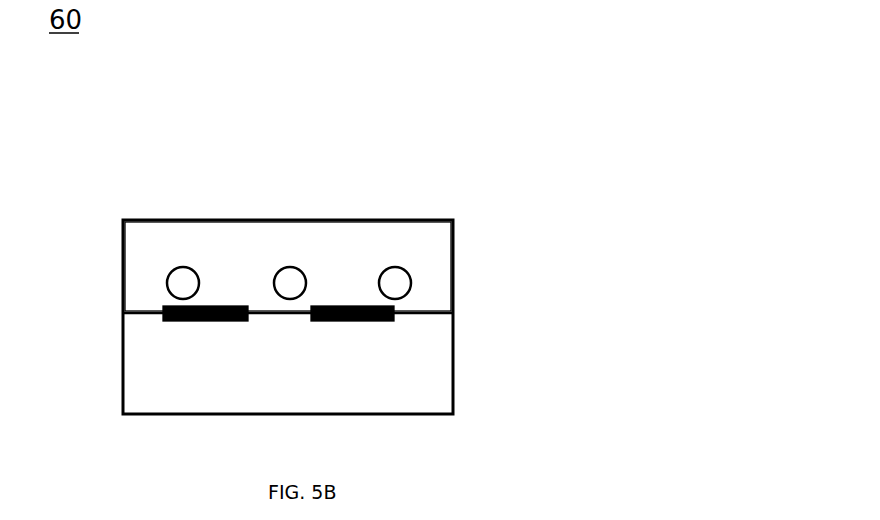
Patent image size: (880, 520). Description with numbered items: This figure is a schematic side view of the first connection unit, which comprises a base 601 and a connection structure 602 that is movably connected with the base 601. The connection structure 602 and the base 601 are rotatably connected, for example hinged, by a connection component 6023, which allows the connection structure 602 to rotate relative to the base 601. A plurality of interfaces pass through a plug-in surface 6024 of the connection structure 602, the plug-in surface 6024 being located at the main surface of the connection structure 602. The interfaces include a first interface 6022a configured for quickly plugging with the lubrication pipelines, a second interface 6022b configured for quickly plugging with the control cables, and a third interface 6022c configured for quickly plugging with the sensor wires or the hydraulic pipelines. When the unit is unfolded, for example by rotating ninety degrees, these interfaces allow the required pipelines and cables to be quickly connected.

The base 601 is at (385, 387).
The connection structure 602 is at (440, 255).
The plug-in surface 6024 is at (423, 242).
The connection component 6023 is at (163, 315).
The first interface 6022a is at (177, 273).
The second interface 6022b is at (287, 272).
The third interface 6022c is at (393, 270).